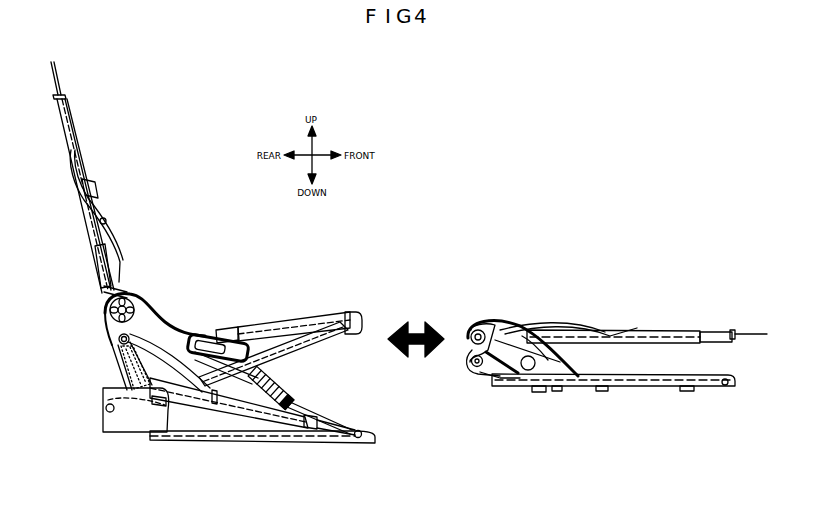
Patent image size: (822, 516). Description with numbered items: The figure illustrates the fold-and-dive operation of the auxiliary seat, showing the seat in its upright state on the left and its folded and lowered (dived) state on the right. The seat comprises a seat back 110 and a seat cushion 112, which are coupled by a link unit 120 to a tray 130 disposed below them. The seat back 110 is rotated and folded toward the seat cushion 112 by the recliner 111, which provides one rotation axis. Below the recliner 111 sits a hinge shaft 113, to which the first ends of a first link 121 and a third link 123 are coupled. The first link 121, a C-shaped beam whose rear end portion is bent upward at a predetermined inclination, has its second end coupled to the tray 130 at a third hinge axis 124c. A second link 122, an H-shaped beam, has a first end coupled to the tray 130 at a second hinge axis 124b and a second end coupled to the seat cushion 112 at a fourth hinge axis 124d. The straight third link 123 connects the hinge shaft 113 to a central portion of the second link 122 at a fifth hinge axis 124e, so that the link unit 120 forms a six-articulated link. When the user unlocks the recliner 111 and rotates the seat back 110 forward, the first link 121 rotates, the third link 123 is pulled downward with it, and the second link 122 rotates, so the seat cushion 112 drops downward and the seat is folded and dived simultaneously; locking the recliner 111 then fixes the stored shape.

The seat back 110 is at (92, 197).
The recliner 111 is at (117, 289).
The seat cushion 112 is at (273, 328).
The hinge shaft 113 is at (108, 331).
The link unit 120 is at (112, 372).
The first link 121 is at (245, 414).
The second link 122 is at (297, 342).
The third link 123 is at (148, 365).
The second hinge axis 124b is at (113, 417).
The third hinge axis 124c is at (359, 439).
The fourth hinge axis 124d is at (332, 320).
The fifth hinge axis 124e is at (160, 406).
The tray 130 is at (281, 440).